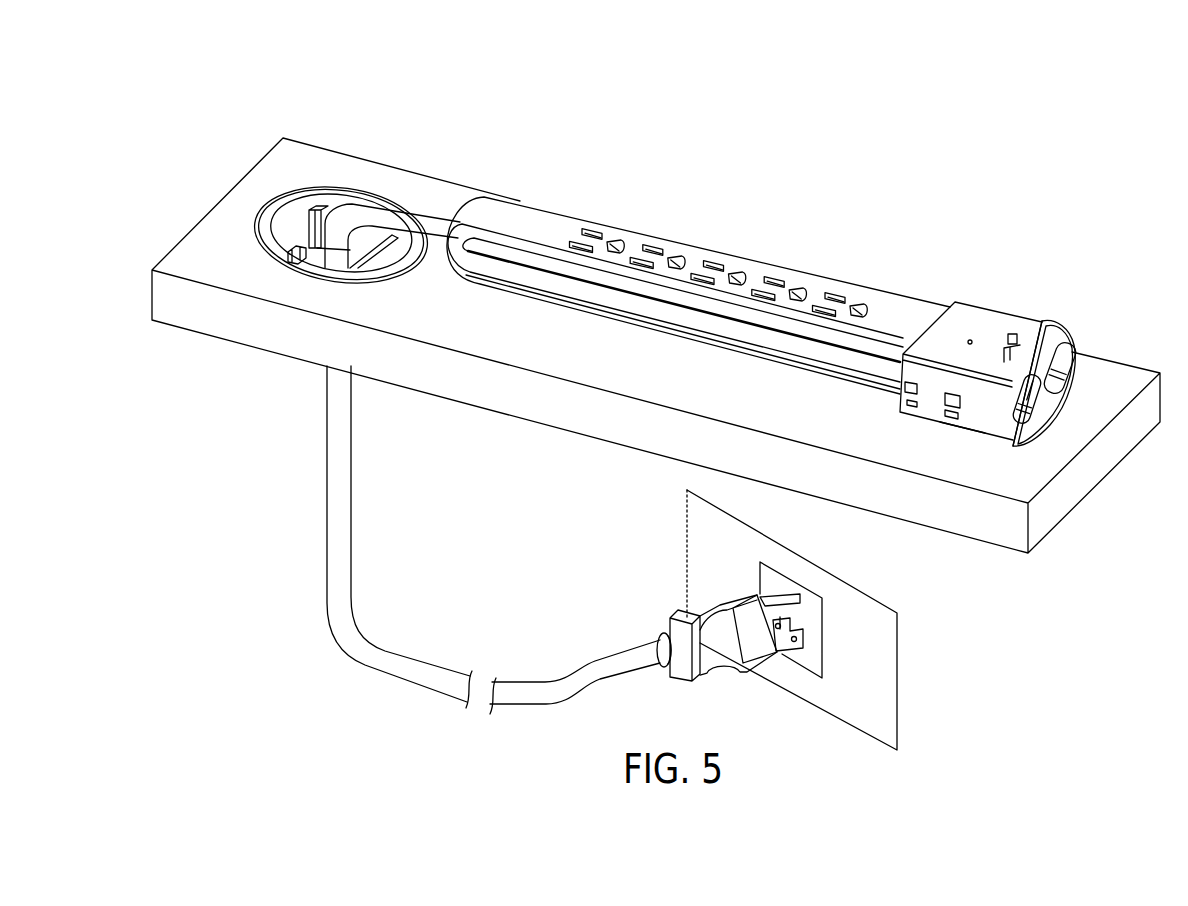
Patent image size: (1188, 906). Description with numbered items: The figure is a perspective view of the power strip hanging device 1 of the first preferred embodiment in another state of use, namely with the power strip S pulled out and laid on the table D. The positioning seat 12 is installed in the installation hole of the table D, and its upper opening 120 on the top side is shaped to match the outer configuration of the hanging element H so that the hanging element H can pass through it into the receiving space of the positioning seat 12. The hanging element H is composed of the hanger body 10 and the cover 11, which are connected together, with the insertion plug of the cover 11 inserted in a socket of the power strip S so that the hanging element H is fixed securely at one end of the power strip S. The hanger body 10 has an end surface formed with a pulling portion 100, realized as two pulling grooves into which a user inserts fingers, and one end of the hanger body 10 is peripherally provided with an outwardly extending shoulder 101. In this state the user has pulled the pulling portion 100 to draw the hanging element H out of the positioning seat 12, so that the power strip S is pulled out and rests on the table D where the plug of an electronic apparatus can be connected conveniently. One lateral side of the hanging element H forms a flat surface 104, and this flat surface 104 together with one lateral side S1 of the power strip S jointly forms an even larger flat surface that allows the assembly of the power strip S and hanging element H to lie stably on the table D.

The power strip hanging device 1 is at (756, 404).
The positioning seat 12 is at (304, 192).
The upper opening 120 is at (299, 208).
The power strip S is at (698, 325).
The lateral side S1 is at (607, 326).
The hanging element H is at (1043, 392).
The cover 11 is at (982, 322).
The hanger body 10 is at (1095, 414).
The pulling portion 100 is at (1033, 411).
The shoulder 101 is at (1016, 428).
The flat surface 104 is at (962, 438).
The table D is at (877, 498).